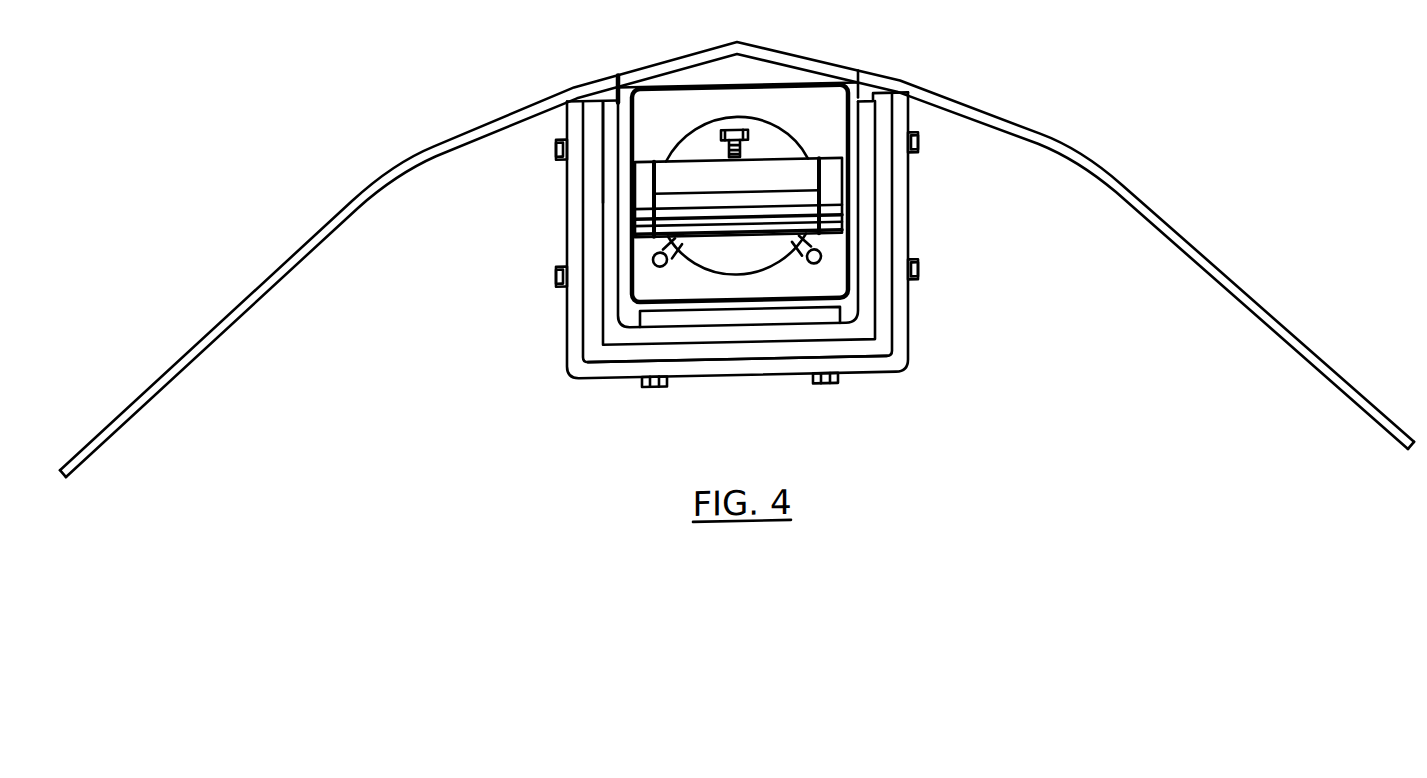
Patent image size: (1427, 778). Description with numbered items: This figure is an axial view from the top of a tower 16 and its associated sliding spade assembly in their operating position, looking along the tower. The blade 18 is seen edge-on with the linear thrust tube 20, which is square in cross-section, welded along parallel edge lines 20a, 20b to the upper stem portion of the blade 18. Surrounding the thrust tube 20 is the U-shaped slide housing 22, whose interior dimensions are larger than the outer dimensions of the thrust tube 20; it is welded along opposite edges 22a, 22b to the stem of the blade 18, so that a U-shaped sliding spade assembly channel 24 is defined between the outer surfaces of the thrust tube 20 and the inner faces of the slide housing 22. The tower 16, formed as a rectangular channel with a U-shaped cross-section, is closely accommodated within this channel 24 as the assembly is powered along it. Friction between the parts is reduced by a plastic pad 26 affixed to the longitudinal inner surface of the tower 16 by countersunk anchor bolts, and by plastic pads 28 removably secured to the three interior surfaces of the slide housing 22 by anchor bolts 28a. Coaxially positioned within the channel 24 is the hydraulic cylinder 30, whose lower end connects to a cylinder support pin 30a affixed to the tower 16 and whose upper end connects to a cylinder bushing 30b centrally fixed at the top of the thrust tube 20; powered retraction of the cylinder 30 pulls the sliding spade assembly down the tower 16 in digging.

The tower 16 is at (608, 112).
The blade 18 is at (452, 122).
The linear thrust tube 20 is at (757, 84).
The parallel edge line 20a is at (617, 95).
The parallel edge line 20b is at (857, 78).
The slide housing 22 is at (862, 365).
The edge 22a is at (560, 100).
The edge 22b is at (907, 97).
The sliding spade assembly channel 24 is at (868, 322).
The friction-reducing plastic pad 26 is at (690, 317).
The friction-reducing plastic pads 28 is at (765, 349).
The anchor bolt 28a is at (556, 272).
The hydraulic cylinder 30 is at (788, 134).
The cylinder support pin 30a is at (730, 170).
The cylinder bushing 30b is at (832, 199).